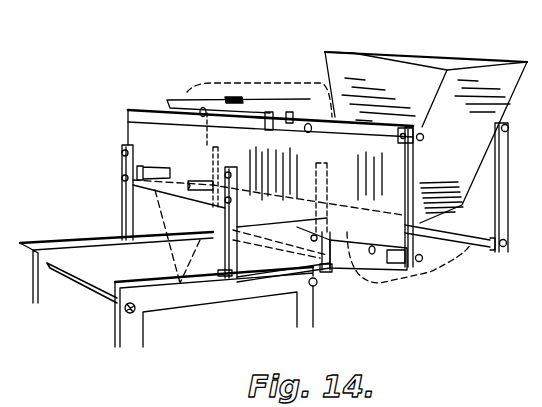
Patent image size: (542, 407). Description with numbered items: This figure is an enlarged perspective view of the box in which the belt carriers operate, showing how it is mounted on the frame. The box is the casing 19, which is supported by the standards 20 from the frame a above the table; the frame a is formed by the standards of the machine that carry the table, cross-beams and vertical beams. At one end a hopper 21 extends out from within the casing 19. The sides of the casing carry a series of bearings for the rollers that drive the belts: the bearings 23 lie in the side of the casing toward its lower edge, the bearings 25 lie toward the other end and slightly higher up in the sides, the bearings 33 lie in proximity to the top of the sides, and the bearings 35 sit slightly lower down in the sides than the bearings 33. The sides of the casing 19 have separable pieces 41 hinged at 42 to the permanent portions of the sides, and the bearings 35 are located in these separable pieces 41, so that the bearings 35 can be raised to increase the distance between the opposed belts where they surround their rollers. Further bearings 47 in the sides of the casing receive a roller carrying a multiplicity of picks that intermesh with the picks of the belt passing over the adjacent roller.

The casing 19 is at (315, 183).
The standards 20 is at (125, 217).
The hopper 21 is at (418, 77).
The bearings 23 is at (372, 254).
The bearings 25 is at (215, 183).
The bearings 33 is at (308, 123).
The bearings 35 is at (203, 107).
The separable pieces 41 is at (233, 115).
The hinge 42 is at (267, 123).
The bearings 47 is at (157, 167).
The standards a is at (88, 253).